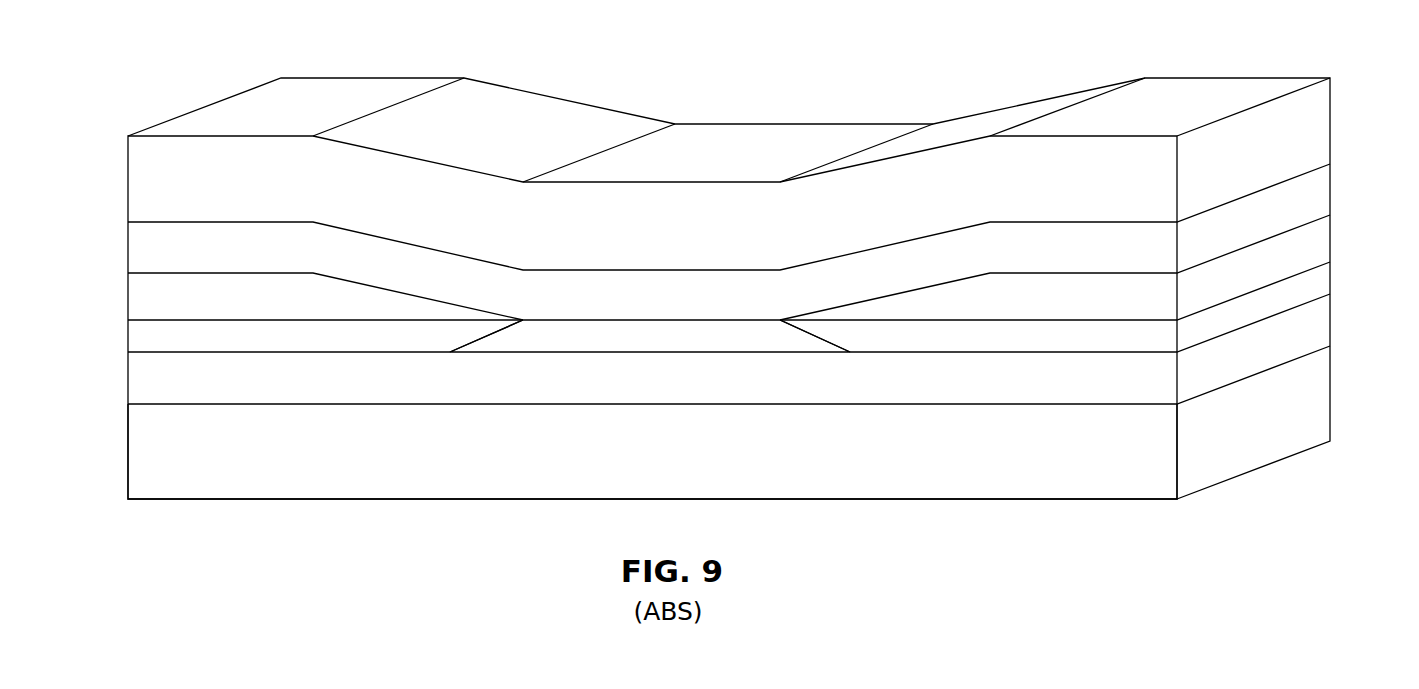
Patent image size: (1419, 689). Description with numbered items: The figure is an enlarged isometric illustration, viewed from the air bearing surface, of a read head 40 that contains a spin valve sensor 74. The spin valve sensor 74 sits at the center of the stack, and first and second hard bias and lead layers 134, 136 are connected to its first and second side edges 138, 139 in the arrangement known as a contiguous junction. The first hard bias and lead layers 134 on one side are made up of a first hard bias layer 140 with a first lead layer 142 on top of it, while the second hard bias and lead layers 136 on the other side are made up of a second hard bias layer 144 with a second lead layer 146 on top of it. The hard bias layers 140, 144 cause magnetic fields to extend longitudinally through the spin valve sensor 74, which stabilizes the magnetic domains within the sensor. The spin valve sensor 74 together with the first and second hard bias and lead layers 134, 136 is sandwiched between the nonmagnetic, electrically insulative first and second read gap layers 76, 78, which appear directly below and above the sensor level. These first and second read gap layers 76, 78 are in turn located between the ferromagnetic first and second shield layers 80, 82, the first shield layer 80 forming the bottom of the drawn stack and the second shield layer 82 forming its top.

The read head 40 is at (832, 73).
The spin valve sensor 74 is at (558, 306).
The first read gap layer 76 is at (530, 395).
The second read gap layer 78 is at (380, 257).
The first shield layer 80 is at (305, 480).
The second shield layer 82 is at (577, 113).
The first hard bias and lead layers 134 is at (127, 275).
The second hard bias and lead layers 136 is at (1337, 213).
The first side edge 138 is at (473, 343).
The second side edge 139 is at (838, 348).
The first hard bias layer 140 is at (173, 340).
The first lead layer 142 is at (173, 287).
The second hard bias layer 144 is at (1124, 337).
The second lead layer 146 is at (1124, 287).